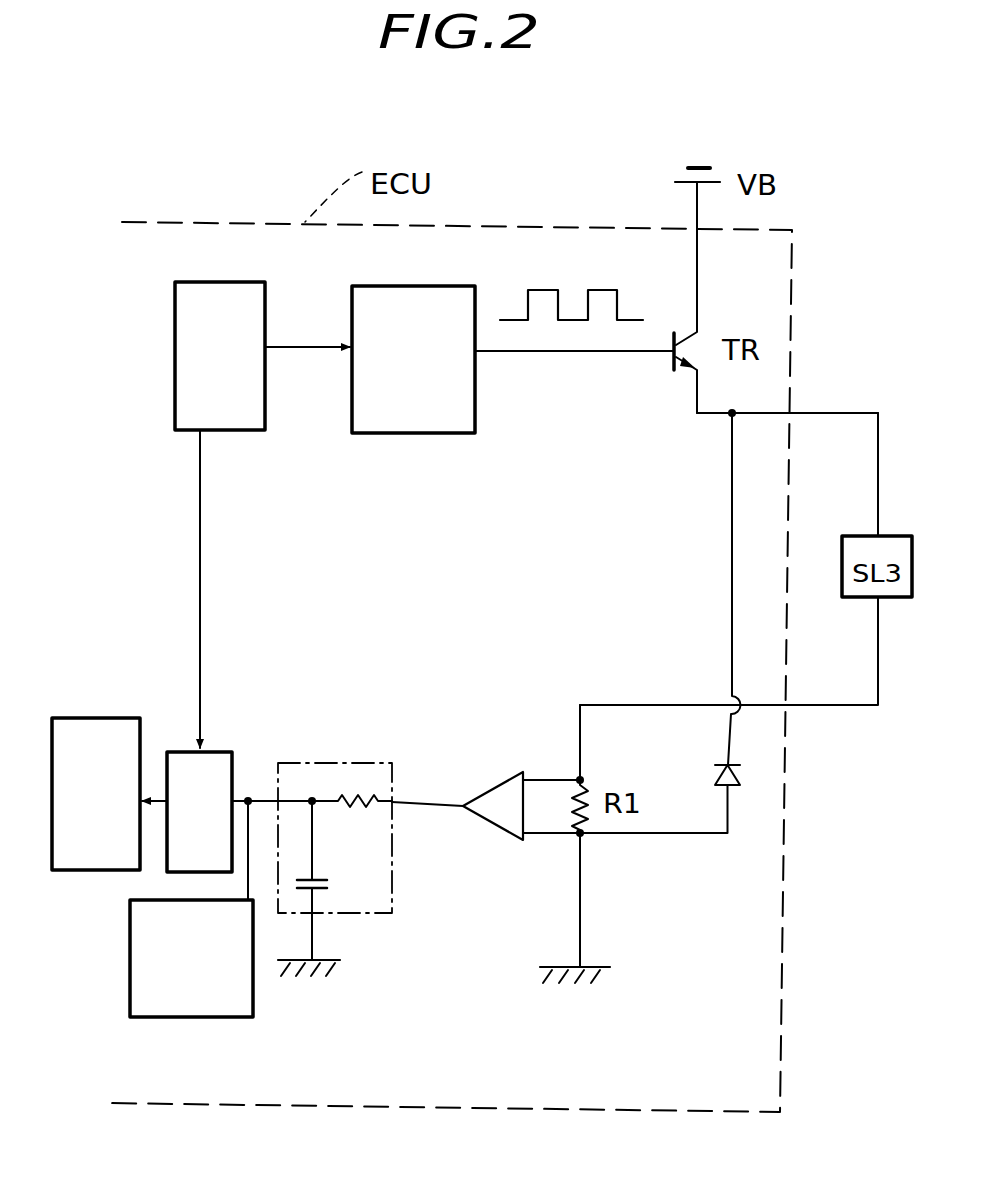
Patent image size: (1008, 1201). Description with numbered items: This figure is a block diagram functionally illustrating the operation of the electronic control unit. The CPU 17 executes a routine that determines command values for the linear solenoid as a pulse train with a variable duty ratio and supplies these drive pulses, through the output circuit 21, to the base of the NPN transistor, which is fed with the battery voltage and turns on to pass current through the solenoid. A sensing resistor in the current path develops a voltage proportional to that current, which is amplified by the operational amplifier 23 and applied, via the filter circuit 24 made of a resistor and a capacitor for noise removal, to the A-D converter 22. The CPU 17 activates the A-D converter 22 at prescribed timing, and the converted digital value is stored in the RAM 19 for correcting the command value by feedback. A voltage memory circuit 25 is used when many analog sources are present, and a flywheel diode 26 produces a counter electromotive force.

The CPU 17 is at (218, 282).
The RAM 19 is at (75, 718).
The output circuit 21 is at (390, 286).
The A-D converter 22 is at (215, 752).
The operational amplifier 23 is at (487, 790).
The filter circuit 24 is at (308, 763).
The voltage memory circuit 25 is at (130, 962).
The flywheel diode 26 is at (712, 765).